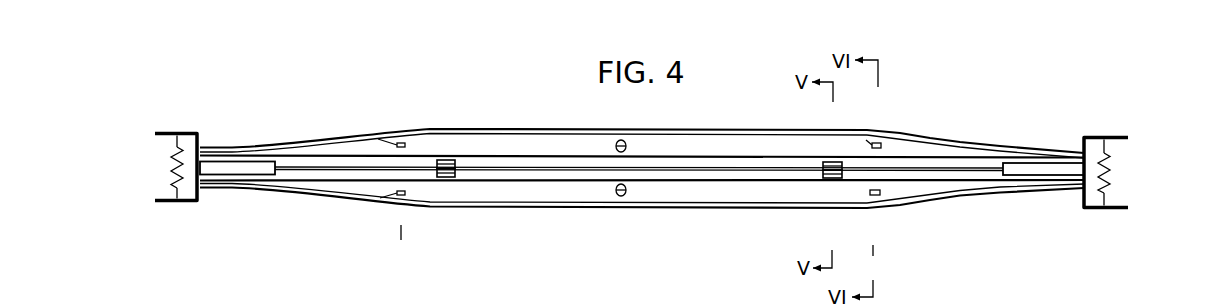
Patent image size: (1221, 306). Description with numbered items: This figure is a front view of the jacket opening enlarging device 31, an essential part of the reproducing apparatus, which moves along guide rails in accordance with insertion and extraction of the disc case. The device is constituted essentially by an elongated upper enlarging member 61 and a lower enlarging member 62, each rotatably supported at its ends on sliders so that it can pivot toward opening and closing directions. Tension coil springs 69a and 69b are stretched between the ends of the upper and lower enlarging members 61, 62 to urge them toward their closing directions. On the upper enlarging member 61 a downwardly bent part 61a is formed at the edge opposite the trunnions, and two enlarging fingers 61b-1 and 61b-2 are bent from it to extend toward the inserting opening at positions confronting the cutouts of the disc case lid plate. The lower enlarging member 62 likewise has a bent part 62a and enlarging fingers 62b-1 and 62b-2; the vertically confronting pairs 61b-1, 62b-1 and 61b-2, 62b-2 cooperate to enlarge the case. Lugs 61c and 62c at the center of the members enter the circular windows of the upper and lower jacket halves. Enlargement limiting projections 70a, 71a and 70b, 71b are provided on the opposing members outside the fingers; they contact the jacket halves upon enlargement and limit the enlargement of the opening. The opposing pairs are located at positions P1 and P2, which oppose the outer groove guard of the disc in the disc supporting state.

The jacket opening enlarging device 31 is at (381, 92).
The upper enlarging member 61 is at (900, 133).
The lower enlarging member 62 is at (908, 204).
The downwardly bent part 61a is at (639, 164).
The bent part 62a is at (652, 174).
The enlarging finger 61b-1 is at (452, 160).
The enlarging finger 61b-2 is at (823, 163).
The enlarging finger 62b-1 is at (452, 178).
The enlarging finger 62b-2 is at (833, 178).
The lug 61c is at (616, 146).
The lug 62c is at (616, 190).
The tension coil spring 69a is at (172, 167).
The tension coil spring 69b is at (1120, 170).
The enlargement limiting projection 70a is at (378, 139).
The enlargement limiting projection 70b is at (866, 140).
The enlargement limiting projection 71a is at (380, 198).
The enlargement limiting projection 71b is at (875, 195).
The position P1 is at (406, 249).
The position P2 is at (887, 260).